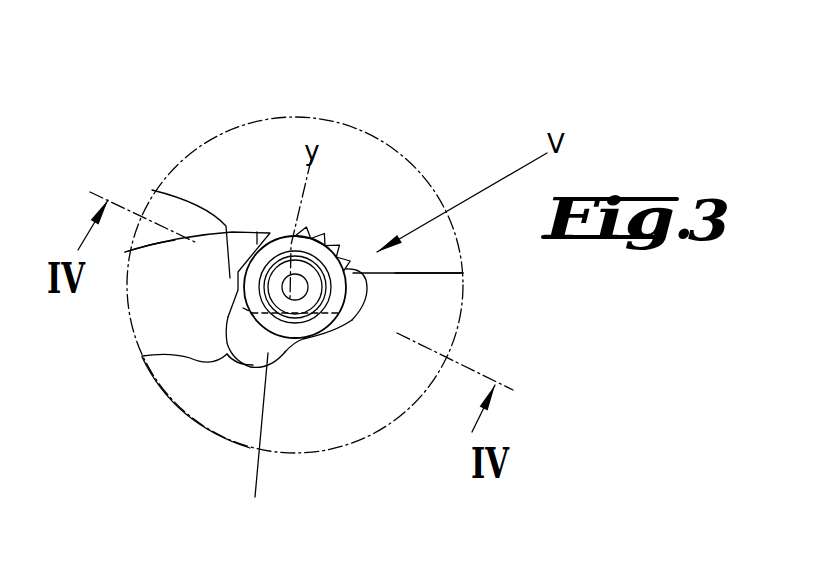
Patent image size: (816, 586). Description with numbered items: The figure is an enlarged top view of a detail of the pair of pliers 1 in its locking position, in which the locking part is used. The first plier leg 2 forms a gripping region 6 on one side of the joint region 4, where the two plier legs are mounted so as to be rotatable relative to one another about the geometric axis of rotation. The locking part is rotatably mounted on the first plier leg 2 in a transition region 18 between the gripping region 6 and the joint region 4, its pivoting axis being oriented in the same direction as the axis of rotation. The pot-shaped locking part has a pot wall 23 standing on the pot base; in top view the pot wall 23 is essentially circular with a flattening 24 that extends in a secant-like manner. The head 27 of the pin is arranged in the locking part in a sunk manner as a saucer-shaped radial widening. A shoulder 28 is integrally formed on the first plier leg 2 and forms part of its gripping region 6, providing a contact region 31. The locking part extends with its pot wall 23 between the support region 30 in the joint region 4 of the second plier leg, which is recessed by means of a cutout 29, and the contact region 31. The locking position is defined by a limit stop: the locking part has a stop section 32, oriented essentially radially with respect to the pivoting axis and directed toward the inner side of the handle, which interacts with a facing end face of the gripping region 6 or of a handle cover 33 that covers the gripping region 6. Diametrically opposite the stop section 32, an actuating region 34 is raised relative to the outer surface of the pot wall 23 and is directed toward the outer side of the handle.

The pair of pliers 1 is at (403, 100).
The first plier leg 2 is at (157, 315).
The joint region 4 is at (348, 395).
The gripping region 6 is at (138, 292).
The transition region 18 is at (238, 377).
The pot wall 23 is at (332, 262).
The flattening 24 is at (265, 315).
The head of the pin 27 is at (334, 243).
The shoulder 28 is at (243, 273).
The cutout 29 is at (343, 330).
The support region 30 is at (356, 302).
The contact region 31 is at (240, 273).
The stop section 32 is at (257, 377).
The handle cover 33 is at (183, 365).
The actuating region 34 is at (330, 240).